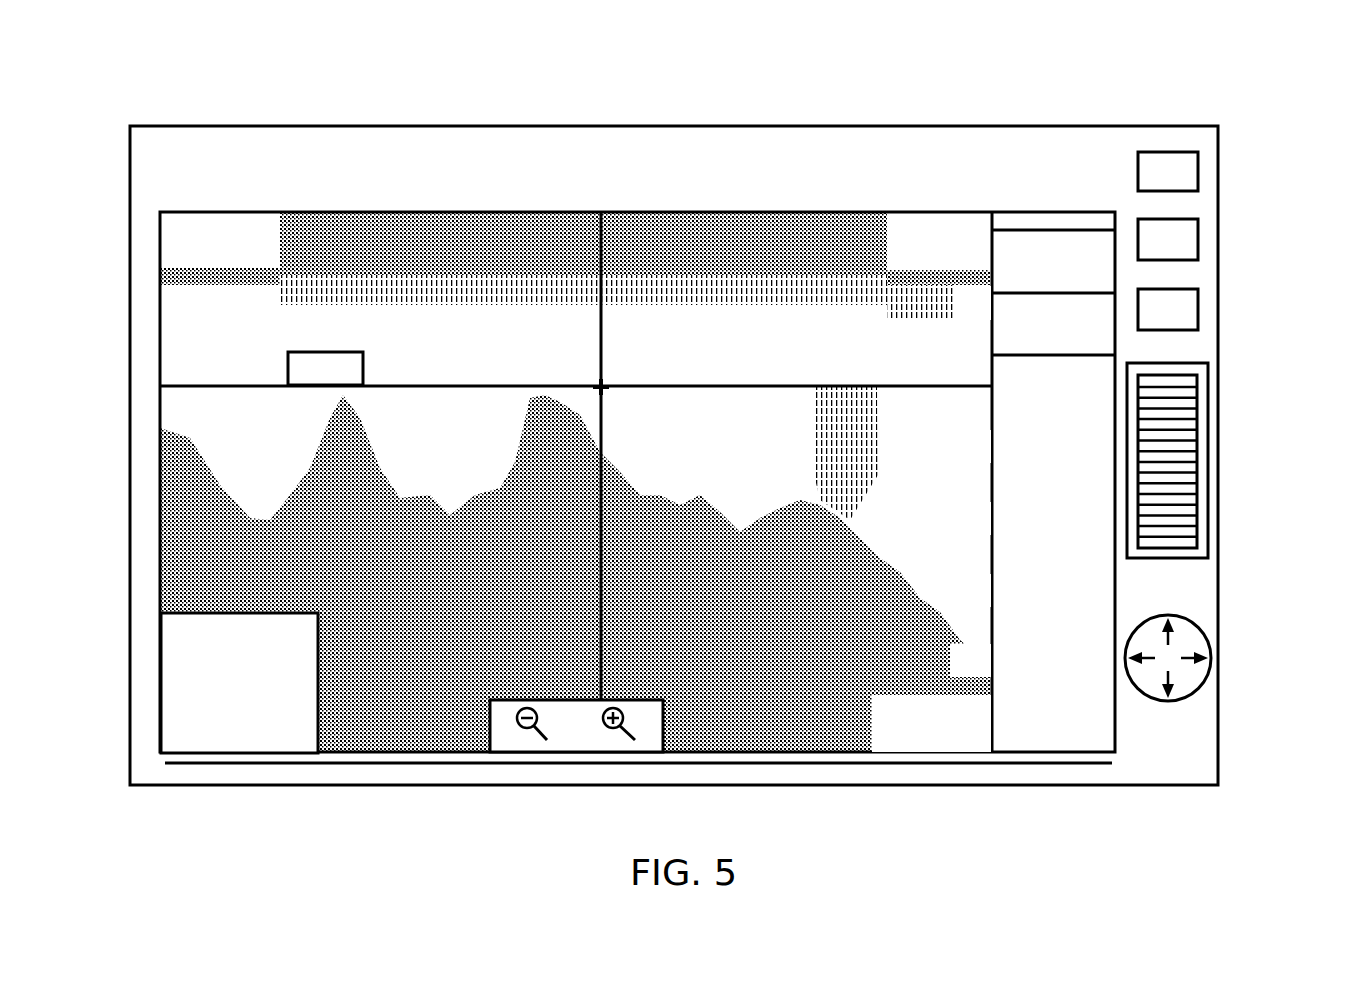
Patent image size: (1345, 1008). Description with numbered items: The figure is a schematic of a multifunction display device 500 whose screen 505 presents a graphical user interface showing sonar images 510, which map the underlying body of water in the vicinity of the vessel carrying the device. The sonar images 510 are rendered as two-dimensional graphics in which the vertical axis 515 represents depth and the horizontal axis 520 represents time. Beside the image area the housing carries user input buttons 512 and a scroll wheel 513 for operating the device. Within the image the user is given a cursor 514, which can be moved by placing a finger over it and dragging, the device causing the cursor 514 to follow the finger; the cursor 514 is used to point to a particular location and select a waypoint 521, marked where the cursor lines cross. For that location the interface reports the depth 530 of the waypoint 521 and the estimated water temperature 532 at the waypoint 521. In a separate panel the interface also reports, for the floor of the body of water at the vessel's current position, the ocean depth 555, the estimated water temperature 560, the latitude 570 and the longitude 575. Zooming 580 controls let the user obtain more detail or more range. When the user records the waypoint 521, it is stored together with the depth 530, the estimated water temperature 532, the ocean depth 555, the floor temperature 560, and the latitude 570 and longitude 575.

The marine electronics device 500 is at (130, 253).
The display screen 505 is at (318, 212).
The sonar images 510 is at (428, 250).
The user input buttons 512 is at (1186, 170).
The scroll wheel 513 is at (1178, 455).
The cursor 514 is at (601, 387).
The vertical axis 515 is at (990, 335).
The horizontal axis 520 is at (940, 763).
The waypoint 521 is at (601, 387).
The depth of the waypoint 530 is at (288, 372).
The estimated water temperature 532 is at (185, 323).
The ocean depth 555 is at (160, 633).
The estimated water temperature at the floor 560 is at (160, 660).
The latitude 570 is at (160, 685).
The longitude 575 is at (160, 710).
The zooming 580 is at (605, 730).